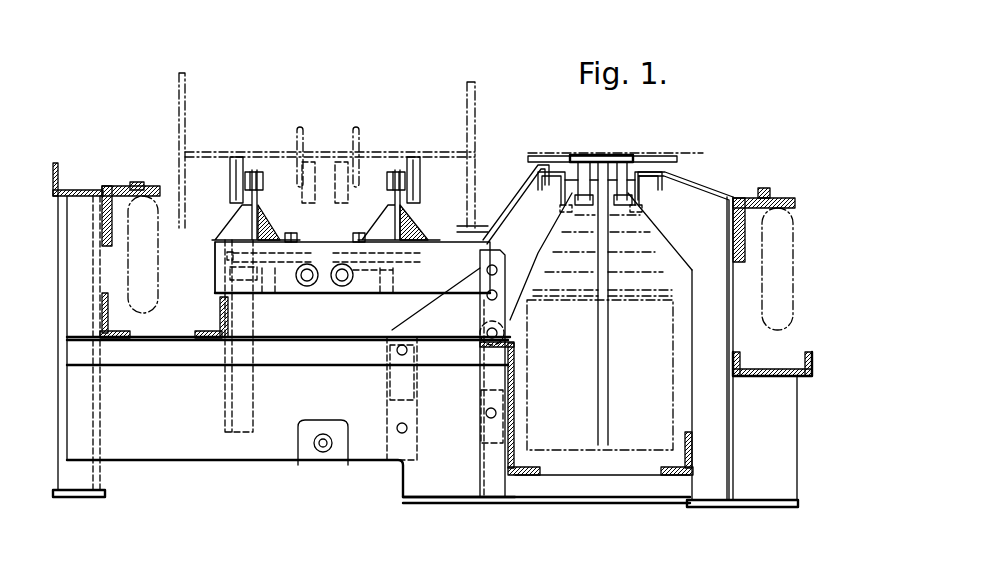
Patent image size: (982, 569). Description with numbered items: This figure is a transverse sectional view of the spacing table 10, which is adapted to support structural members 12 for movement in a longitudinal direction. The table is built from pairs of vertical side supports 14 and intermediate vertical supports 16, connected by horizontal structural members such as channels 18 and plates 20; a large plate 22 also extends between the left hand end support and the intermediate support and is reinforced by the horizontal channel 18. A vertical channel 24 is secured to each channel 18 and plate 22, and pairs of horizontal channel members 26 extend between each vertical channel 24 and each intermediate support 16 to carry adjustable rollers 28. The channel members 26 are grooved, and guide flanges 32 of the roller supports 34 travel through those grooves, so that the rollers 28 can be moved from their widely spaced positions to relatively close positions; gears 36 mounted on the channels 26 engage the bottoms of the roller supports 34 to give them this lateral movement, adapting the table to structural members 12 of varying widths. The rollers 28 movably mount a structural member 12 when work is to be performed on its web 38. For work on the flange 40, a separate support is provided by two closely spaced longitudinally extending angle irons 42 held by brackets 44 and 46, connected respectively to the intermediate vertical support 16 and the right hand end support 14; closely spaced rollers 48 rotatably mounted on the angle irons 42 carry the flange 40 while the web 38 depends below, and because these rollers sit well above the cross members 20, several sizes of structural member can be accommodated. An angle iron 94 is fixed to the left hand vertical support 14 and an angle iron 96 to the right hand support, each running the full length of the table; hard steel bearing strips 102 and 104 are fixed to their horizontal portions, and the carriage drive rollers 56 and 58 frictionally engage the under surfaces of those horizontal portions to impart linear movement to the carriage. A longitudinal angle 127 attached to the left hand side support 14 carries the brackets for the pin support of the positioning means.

The spacing table 10 is at (619, 138).
The structural member 12 is at (479, 136).
The vertical side support 14 is at (98, 486).
The intermediate vertical support 16 is at (490, 492).
The channel 18 is at (184, 334).
The plate 20 is at (585, 498).
The large plate 22 is at (200, 452).
The vertical channel 24 is at (245, 319).
The horizontal channel member 26 is at (366, 293).
The adjustable roller 28 is at (230, 178).
The guide flange 32 is at (313, 243).
The roller support 34 is at (226, 224).
The gear 36 is at (339, 287).
The web 38 is at (368, 150).
The flange 40 is at (680, 156).
The angle iron 42 is at (565, 178).
The bracket 44 is at (521, 209).
The bracket 46 is at (688, 192).
The roller 48 is at (566, 200).
The drive wheel 56 is at (154, 299).
The drive wheel 58 is at (788, 318).
The angle iron 94 is at (151, 186).
The angle iron 96 is at (781, 198).
The bearing strip 102 is at (137, 182).
The bearing strip 104 is at (764, 188).
The longitudinal angle 127 is at (58, 178).